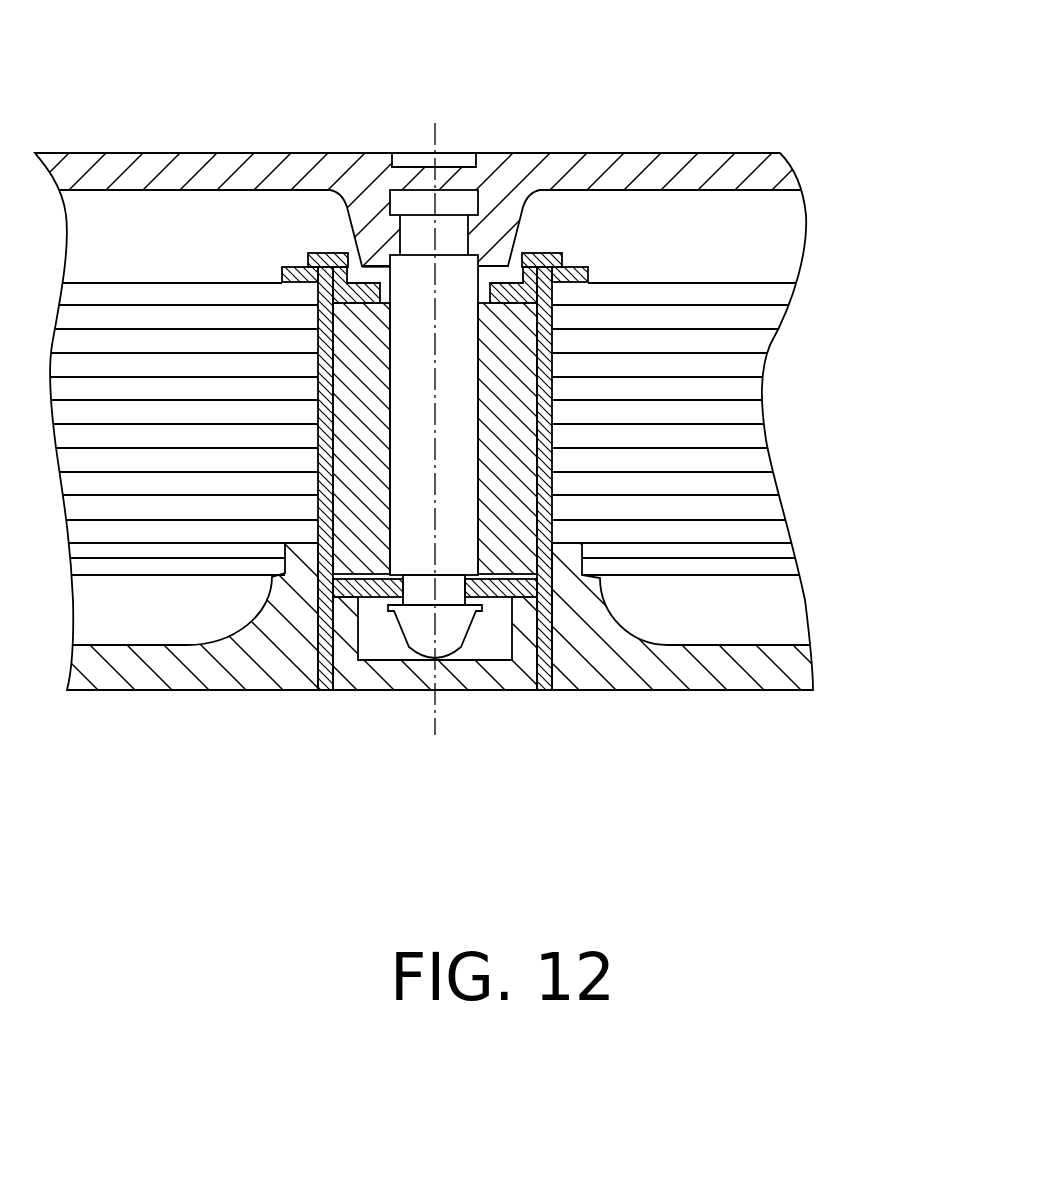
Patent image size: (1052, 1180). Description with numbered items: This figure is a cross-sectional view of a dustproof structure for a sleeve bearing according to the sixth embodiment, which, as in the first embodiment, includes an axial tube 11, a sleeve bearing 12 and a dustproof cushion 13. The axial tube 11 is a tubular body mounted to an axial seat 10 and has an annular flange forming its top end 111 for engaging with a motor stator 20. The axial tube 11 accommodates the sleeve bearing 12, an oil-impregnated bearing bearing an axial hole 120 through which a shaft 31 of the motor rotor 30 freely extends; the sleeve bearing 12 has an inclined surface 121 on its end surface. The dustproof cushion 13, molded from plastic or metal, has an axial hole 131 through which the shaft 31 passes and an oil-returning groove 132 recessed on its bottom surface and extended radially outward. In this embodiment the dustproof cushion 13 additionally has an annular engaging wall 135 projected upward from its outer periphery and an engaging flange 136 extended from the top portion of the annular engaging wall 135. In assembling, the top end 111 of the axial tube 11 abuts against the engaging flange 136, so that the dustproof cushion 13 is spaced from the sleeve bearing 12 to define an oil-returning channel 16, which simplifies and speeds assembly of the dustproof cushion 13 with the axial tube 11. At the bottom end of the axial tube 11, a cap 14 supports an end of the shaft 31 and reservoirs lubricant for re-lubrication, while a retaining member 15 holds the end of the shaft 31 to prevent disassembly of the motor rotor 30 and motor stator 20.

The axial seat 10 is at (783, 677).
The axial tube 11 is at (555, 635).
The sleeve bearing 12 is at (388, 500).
The axial hole 120 is at (365, 600).
The inclined surface 121 is at (278, 288).
The dustproof cushion 13 is at (350, 272).
The axial hole 131 is at (372, 270).
The oil-returning groove 132 is at (492, 297).
The annular engaging wall 135 is at (510, 266).
The engaging flange 136 is at (547, 255).
The top end of the axial tube 111 is at (568, 262).
The cap 14 is at (456, 652).
The retaining member 15 is at (490, 520).
The oil-returning channel 16 is at (368, 278).
The motor stator 20 is at (743, 315).
The motor rotor 30 is at (717, 168).
The shaft 31 is at (453, 273).